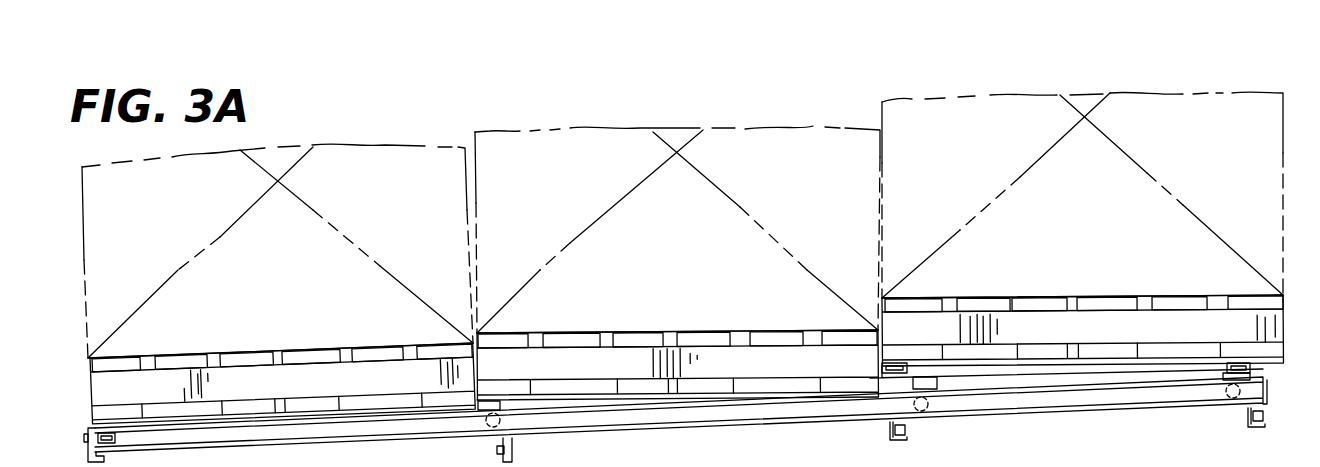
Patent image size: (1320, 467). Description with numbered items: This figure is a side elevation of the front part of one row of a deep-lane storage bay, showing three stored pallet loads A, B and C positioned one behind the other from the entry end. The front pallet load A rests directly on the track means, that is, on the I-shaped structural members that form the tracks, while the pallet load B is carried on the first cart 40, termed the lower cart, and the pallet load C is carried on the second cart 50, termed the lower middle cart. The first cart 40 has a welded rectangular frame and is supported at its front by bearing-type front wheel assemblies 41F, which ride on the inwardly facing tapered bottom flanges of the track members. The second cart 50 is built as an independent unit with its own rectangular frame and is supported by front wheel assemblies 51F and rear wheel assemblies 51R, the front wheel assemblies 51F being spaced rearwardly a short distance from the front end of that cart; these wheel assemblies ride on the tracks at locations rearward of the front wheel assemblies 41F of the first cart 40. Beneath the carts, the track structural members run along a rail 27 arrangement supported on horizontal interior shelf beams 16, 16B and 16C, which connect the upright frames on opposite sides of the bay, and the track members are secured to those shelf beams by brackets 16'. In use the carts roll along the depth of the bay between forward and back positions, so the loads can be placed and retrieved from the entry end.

The pallet load A is at (353, 213).
The pallet load B is at (630, 158).
The pallet load C is at (935, 120).
The conveyor rail 27 is at (786, 411).
The first cart 40 is at (560, 403).
The second cart 50 is at (1003, 377).
The front wheel assembly 41F is at (493, 410).
The front wheel assembly 51F is at (927, 377).
The rear wheel assembly 51R is at (1227, 377).
The interior shelf beam 16 is at (912, 444).
The bracket 16' is at (526, 452).
The interior shelf beam 16B is at (905, 436).
The interior shelf beam 16C is at (1272, 437).